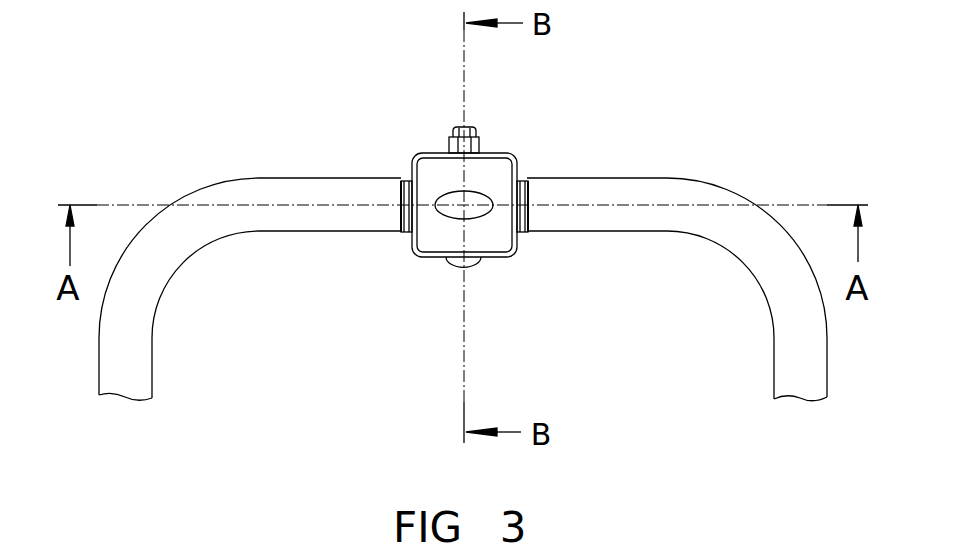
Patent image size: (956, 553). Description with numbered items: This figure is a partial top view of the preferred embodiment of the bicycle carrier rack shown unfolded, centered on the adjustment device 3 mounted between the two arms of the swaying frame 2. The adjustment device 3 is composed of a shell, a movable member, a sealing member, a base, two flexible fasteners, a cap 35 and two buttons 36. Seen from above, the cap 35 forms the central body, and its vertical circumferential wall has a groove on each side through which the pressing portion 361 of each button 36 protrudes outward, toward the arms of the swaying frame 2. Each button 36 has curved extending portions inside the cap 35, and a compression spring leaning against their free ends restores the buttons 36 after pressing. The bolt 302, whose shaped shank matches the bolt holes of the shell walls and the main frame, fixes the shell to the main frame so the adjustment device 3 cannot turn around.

The swaying frame 2 is at (245, 187).
The adjustment device 3 is at (492, 104).
The cap 35 is at (500, 167).
The button 36 is at (402, 178).
The pressing portion 361 is at (397, 230).
The bolt 302 is at (460, 263).